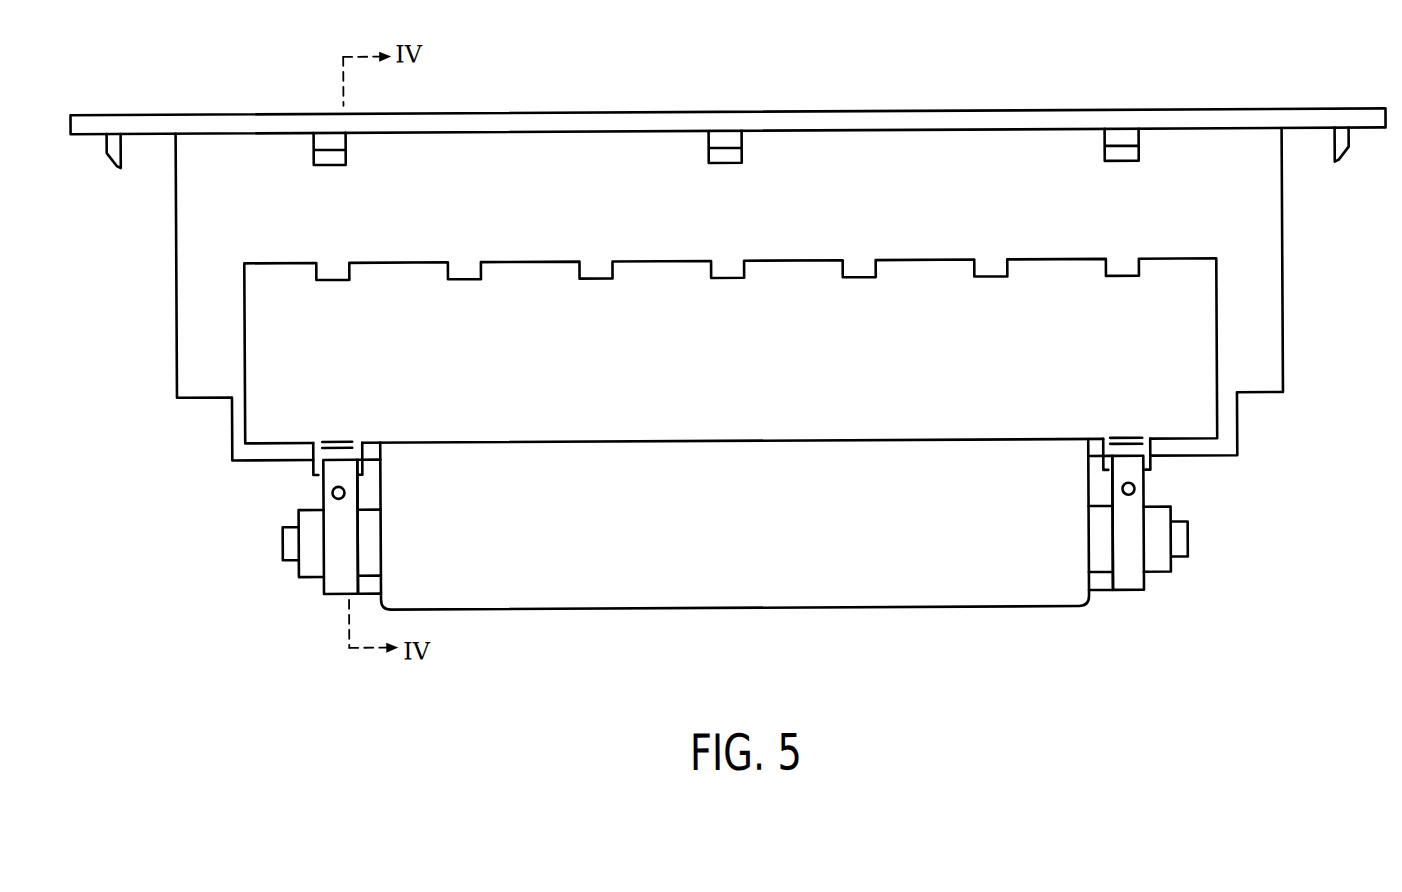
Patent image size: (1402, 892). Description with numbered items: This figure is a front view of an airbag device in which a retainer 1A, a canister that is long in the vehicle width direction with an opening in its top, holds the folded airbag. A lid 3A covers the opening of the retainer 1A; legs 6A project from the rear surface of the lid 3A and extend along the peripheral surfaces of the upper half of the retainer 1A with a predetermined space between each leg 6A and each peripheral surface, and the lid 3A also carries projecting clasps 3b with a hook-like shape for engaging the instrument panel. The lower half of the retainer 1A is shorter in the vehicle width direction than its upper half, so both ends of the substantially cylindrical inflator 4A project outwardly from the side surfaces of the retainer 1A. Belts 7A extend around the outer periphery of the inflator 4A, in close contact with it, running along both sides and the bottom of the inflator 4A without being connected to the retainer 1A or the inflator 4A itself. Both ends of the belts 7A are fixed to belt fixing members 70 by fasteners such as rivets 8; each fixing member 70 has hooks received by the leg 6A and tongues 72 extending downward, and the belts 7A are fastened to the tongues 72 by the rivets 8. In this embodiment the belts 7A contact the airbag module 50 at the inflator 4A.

The retainer 1A is at (798, 550).
The lid 3A is at (921, 110).
The projecting clasps 3b is at (116, 165).
The inflator 4A is at (292, 568).
The legs 6A is at (617, 156).
The belts 7A is at (340, 583).
The rivets 8 is at (339, 498).
The airbag module 50 is at (612, 610).
The belt fixing member 70 is at (931, 278).
The tongues 72 is at (357, 446).